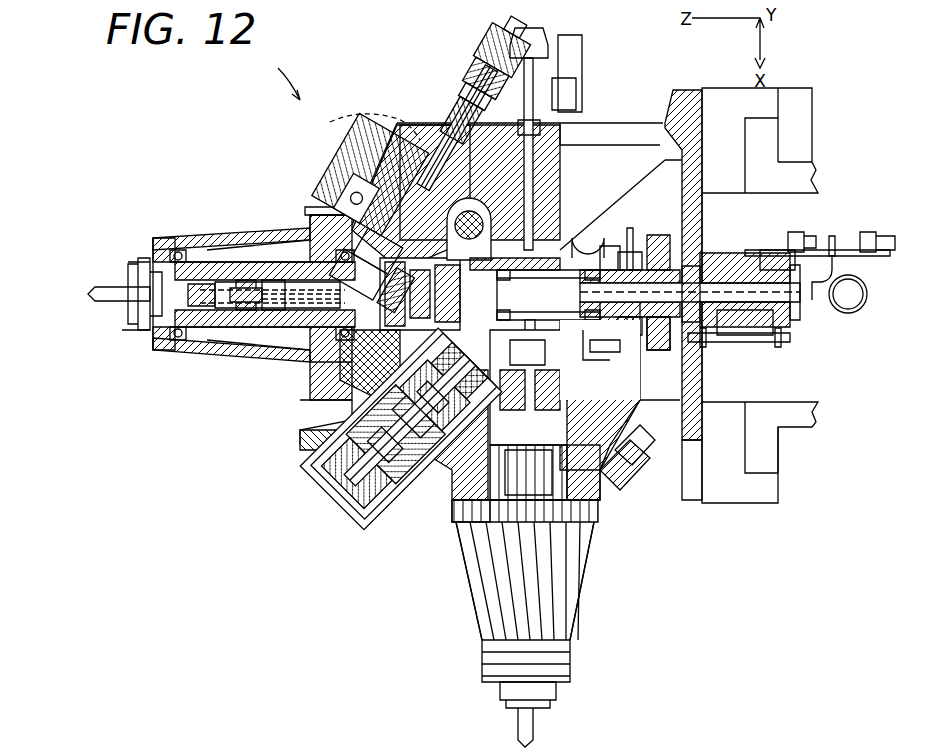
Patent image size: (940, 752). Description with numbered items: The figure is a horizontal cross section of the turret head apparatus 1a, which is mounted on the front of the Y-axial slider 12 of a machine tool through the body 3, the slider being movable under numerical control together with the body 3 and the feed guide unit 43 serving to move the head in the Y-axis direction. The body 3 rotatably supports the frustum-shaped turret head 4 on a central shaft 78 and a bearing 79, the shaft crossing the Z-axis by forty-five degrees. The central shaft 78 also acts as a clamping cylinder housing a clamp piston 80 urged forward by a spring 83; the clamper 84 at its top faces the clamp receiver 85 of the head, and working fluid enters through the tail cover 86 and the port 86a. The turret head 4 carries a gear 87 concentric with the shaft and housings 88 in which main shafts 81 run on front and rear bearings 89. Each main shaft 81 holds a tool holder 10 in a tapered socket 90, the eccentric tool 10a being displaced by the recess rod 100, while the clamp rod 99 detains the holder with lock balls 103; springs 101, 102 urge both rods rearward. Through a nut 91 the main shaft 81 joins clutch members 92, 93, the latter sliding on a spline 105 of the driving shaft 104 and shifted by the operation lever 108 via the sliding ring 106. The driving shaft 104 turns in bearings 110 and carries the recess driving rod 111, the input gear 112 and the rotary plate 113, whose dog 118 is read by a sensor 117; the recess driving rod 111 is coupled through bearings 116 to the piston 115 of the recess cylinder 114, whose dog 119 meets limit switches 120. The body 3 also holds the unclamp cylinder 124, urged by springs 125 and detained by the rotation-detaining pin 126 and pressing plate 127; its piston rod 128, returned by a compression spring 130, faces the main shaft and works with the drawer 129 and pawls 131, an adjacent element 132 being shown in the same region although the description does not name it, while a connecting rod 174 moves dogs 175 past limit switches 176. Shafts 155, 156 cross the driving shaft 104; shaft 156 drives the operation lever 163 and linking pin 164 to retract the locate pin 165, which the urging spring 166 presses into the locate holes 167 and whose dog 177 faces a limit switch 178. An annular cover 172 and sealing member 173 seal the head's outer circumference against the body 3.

The turret head apparatus 1a is at (275, 67).
The body 3 is at (678, 100).
The turret head 4 is at (300, 400).
The tool holder 10 is at (134, 330).
The eccentric tool 10a is at (108, 287).
The Y-axial slider 12 is at (716, 88).
The feed guide unit 43 is at (867, 296).
The central shaft 78 is at (345, 485).
The bearing 79 is at (300, 427).
The clamp piston 80 is at (360, 512).
The main shaft 81 is at (230, 262).
The spring 83 is at (325, 465).
The clamper 84 is at (375, 528).
The clamp receiver 85 is at (312, 450).
The tail cover 86 is at (410, 520).
The port 86a is at (438, 500).
The gear 87 is at (360, 160).
The housing 88 is at (220, 240).
The bearing 89 is at (336, 250).
The tapered socket 90 is at (140, 258).
The nut 91 is at (322, 215).
The clutch member 92 is at (310, 380).
The clutch member 93 is at (400, 329).
The clamp rod 99 is at (256, 327).
The recess rod 100 is at (258, 262).
The spring 101 is at (246, 310).
The spring 102 is at (282, 327).
The lock ball 103 is at (210, 327).
The driving shaft 104 is at (531, 305).
The spline 105 is at (588, 222).
The sliding ring 106 is at (330, 412).
The operation lever 108 is at (608, 246).
The bearing 110 is at (626, 228).
The recess driving rod 111 is at (706, 253).
The input gear 112 is at (658, 235).
The rotary plate 113 is at (600, 360).
The recess cylinder 114 is at (754, 342).
The piston 115 is at (768, 250).
The bearing 116 is at (726, 342).
The sensor 117 is at (626, 194).
The dog 118 is at (636, 252).
The dog 119 is at (833, 236).
The limit switch 120 is at (796, 232).
The unclamp cylinder 124 is at (466, 522).
The spring 125 is at (310, 442).
The rotation-detaining pin 126 is at (625, 361).
The pressing plate 127 is at (476, 560).
The piston rod 128 is at (640, 480).
The drawer 129 is at (588, 530).
The compression spring 130 is at (602, 500).
The pawl 131 is at (512, 500).
The bore 132 is at (534, 500).
The shaft 155 is at (492, 230).
The shaft 156 is at (420, 120).
The operation lever 163 is at (460, 105).
The linking pin 164 is at (380, 122).
The locate pin 165 is at (450, 120).
The urging spring 166 is at (470, 75).
The locate hole 167 is at (345, 175).
The annular cover 172 is at (330, 195).
The sealing member 173 is at (648, 470).
The connecting rod 174 is at (534, 162).
The dog 175 is at (540, 32).
The limit switch 176 is at (584, 52).
The dog 177 is at (480, 50).
The limit switch 178 is at (500, 50).